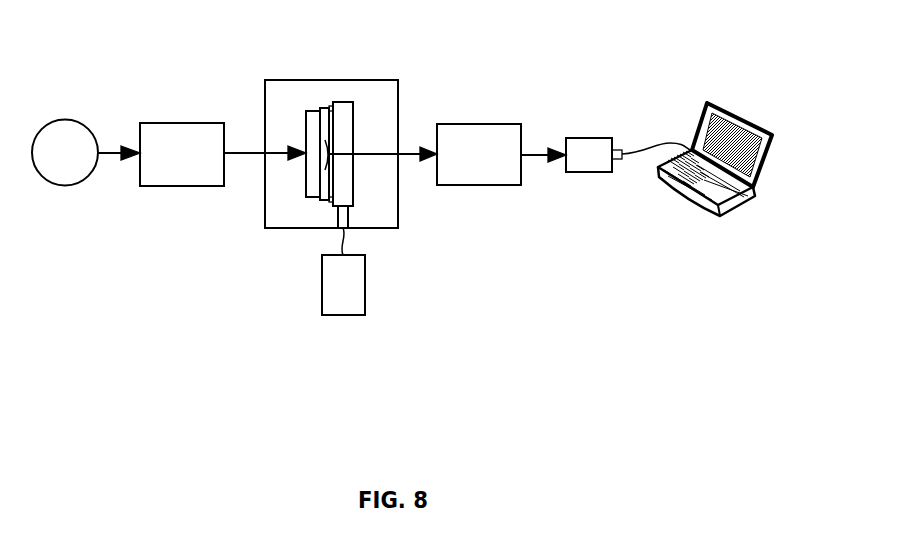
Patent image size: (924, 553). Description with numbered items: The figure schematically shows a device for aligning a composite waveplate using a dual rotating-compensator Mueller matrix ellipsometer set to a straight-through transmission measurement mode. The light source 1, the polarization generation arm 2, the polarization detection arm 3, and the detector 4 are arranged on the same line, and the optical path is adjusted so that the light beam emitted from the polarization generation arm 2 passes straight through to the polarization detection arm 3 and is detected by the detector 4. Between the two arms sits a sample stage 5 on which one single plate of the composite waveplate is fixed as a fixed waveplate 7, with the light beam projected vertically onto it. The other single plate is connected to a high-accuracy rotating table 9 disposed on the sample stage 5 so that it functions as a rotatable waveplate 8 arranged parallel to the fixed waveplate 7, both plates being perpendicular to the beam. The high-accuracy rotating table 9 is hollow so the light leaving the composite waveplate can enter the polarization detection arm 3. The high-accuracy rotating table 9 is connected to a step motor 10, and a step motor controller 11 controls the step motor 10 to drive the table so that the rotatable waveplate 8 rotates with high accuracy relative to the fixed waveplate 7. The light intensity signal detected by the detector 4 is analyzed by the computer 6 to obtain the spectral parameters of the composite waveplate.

The light source 1 is at (66, 176).
The polarization generation arm 2 is at (162, 178).
The polarization detection arm 3 is at (473, 177).
The detector 4 is at (582, 164).
The sample stage 5 is at (327, 85).
The computer 6 is at (697, 197).
The fixed waveplate 7 is at (305, 114).
The rotatable waveplate 8 is at (321, 196).
The high-accuracy rotating table 9 is at (349, 113).
The step motor 10 is at (341, 221).
The step motor controller 11 is at (358, 292).